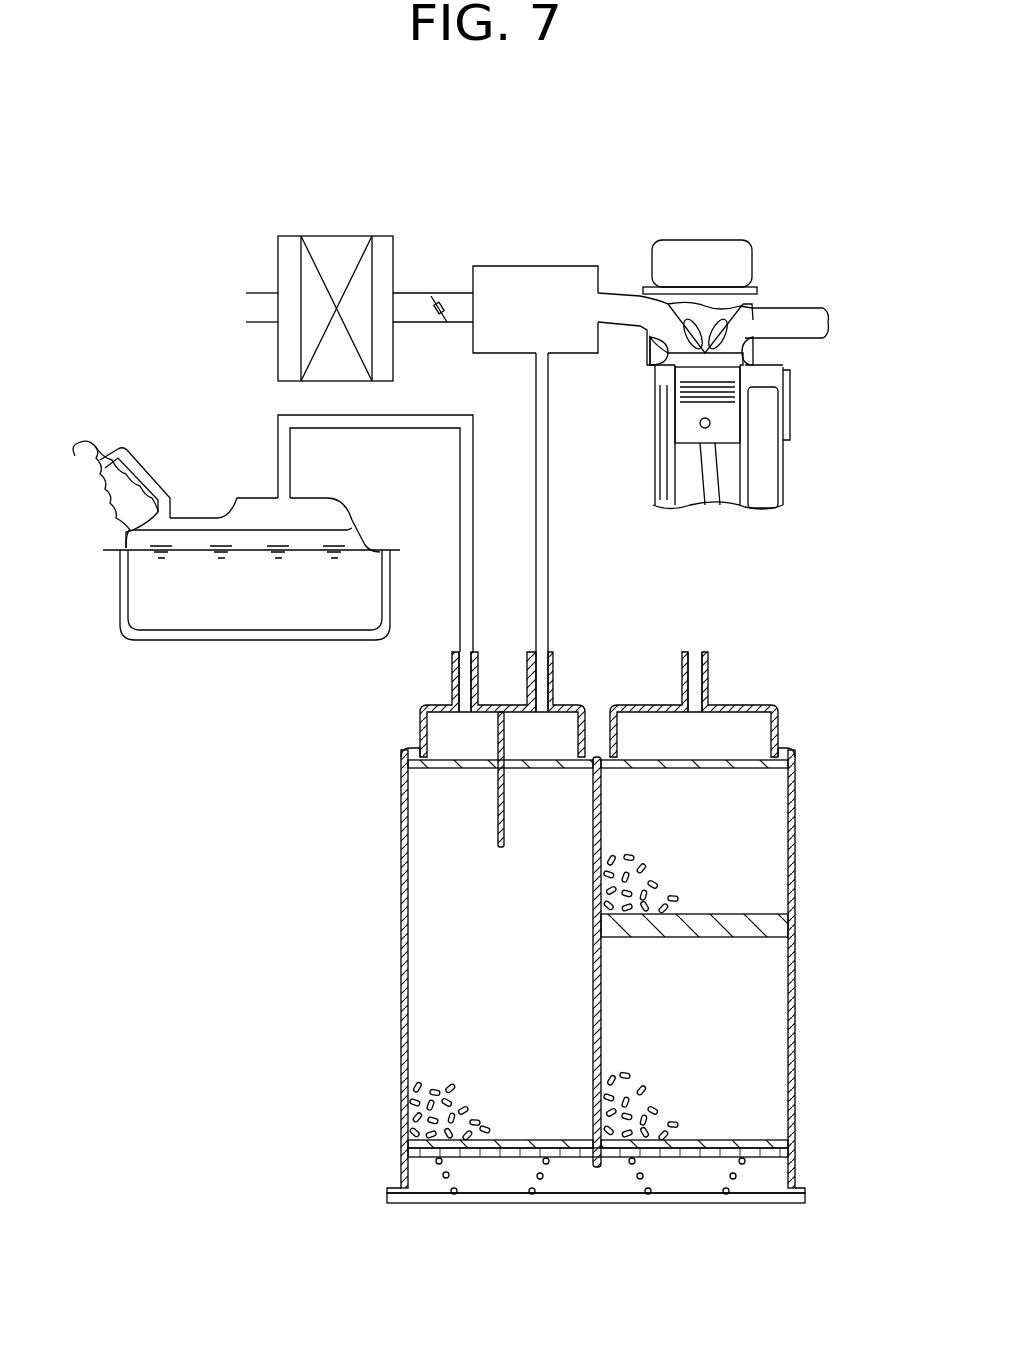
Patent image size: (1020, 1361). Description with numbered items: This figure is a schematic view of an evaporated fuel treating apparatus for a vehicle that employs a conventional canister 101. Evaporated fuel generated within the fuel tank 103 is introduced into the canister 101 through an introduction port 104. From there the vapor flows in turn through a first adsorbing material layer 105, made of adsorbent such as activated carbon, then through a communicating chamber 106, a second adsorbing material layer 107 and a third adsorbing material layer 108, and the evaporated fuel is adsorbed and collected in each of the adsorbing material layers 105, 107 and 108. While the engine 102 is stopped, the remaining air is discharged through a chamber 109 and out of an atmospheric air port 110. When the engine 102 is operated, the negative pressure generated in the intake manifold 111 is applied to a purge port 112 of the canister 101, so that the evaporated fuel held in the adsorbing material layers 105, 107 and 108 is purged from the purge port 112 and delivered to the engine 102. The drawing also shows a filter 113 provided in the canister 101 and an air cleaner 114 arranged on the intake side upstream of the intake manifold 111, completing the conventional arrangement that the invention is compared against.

The canister 101 is at (401, 927).
The engine 102 is at (753, 265).
The fuel tank 103 is at (223, 640).
The introduction port 104 is at (462, 673).
The first adsorbing material layer 105 is at (430, 1001).
The communicating chamber 106 is at (577, 1187).
The second adsorbing material layer 107 is at (758, 1070).
The third adsorbing material layer 108 is at (767, 882).
The chamber 109 is at (758, 732).
The atmospheric air port 110 is at (695, 660).
The intake manifold 111 is at (530, 277).
The purge port 112 is at (540, 665).
The filter 113 is at (440, 770).
The air cleaner 114 is at (338, 250).